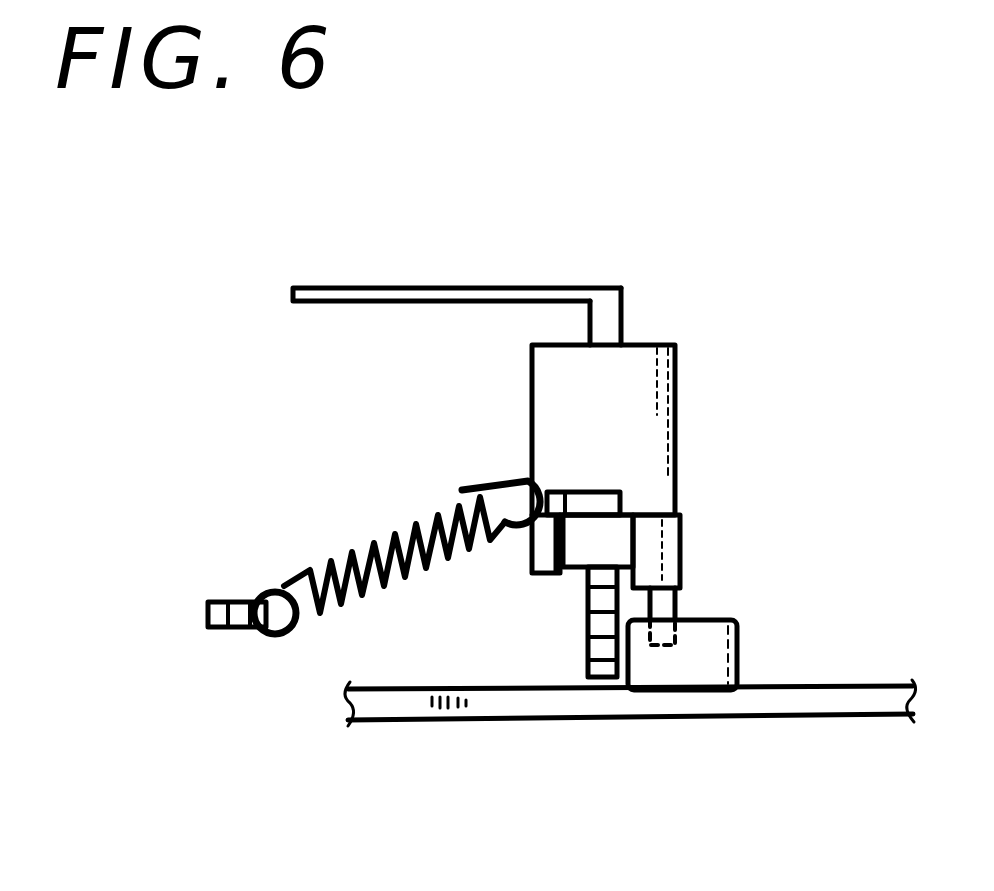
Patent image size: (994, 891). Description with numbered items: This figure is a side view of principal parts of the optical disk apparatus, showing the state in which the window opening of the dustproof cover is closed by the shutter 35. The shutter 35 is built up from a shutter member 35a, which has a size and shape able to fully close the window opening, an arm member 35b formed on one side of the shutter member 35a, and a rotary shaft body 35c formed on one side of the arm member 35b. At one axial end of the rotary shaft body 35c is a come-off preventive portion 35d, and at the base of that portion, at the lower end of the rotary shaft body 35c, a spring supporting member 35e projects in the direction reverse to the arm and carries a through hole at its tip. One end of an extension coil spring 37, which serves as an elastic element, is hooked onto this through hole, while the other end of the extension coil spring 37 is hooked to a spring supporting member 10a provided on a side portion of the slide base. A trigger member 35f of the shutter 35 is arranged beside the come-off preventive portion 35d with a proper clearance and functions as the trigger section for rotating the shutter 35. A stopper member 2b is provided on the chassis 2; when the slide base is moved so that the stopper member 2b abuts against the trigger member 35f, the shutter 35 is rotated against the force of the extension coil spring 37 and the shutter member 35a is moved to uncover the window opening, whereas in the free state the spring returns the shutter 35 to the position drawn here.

The chassis 2 is at (783, 705).
The stopper member 2b is at (740, 641).
The spring supporting member 10a is at (218, 600).
The shutter 35 is at (603, 270).
The shutter member 35a is at (418, 286).
The arm member 35b is at (608, 313).
The rotary shaft body 35c is at (638, 385).
The come-off preventive portion 35d is at (603, 610).
The spring supporting member 35e is at (590, 491).
The trigger member 35f is at (680, 606).
The extension coil spring 37 is at (373, 558).